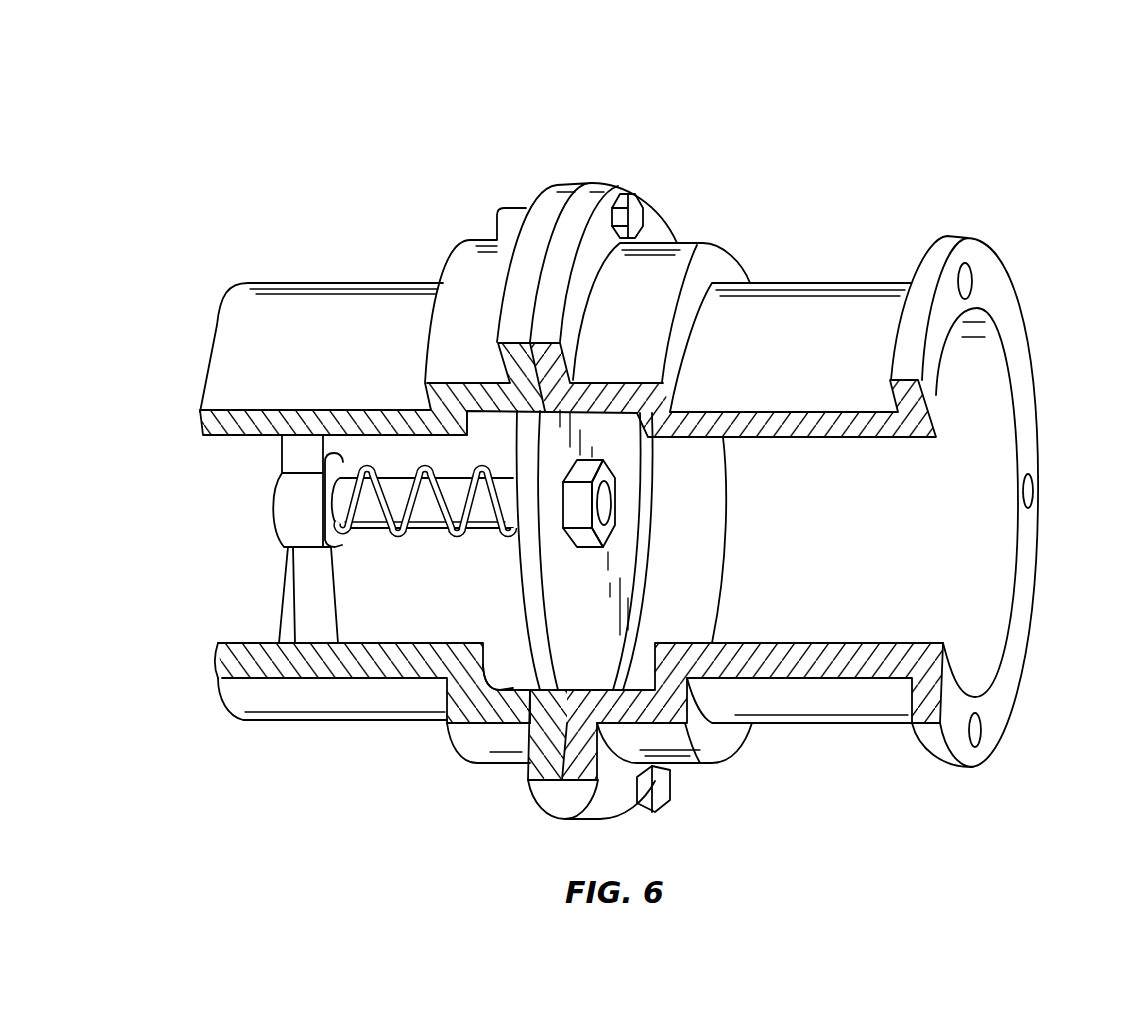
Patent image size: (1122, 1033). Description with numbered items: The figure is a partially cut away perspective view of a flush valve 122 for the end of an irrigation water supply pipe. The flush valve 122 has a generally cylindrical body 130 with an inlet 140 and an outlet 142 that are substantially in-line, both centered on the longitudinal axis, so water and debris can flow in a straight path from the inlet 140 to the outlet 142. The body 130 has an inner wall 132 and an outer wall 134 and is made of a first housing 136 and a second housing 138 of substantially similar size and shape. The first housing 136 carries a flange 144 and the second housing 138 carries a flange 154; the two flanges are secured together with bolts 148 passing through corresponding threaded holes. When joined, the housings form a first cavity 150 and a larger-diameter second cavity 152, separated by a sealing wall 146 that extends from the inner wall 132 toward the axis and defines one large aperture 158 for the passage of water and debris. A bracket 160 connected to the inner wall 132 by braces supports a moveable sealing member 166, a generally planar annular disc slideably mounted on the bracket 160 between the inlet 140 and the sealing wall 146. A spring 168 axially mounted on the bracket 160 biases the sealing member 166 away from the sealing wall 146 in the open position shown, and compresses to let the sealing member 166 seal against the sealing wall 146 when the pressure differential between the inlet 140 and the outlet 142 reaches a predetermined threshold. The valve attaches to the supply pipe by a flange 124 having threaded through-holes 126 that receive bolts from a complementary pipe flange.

The flush valve 122 is at (774, 88).
The flange 124 is at (977, 257).
The threaded through-holes 126 is at (976, 737).
The body 130 is at (745, 240).
The inner wall 132 is at (230, 643).
The outer wall 134 is at (240, 718).
The first housing 136 is at (800, 283).
The second housing 138 is at (332, 283).
The inlet 140 is at (953, 476).
The outlet 142 is at (222, 523).
The flange 144 is at (608, 183).
The sealing wall 146 is at (497, 688).
The bolts 148 is at (638, 216).
The first cavity 150 is at (812, 610).
The second cavity 152 is at (645, 665).
The flange 154 is at (558, 184).
The aperture 158 is at (450, 456).
The bracket 160 is at (377, 507).
The moveable sealing member 166 is at (547, 673).
The spring 168 is at (280, 453).